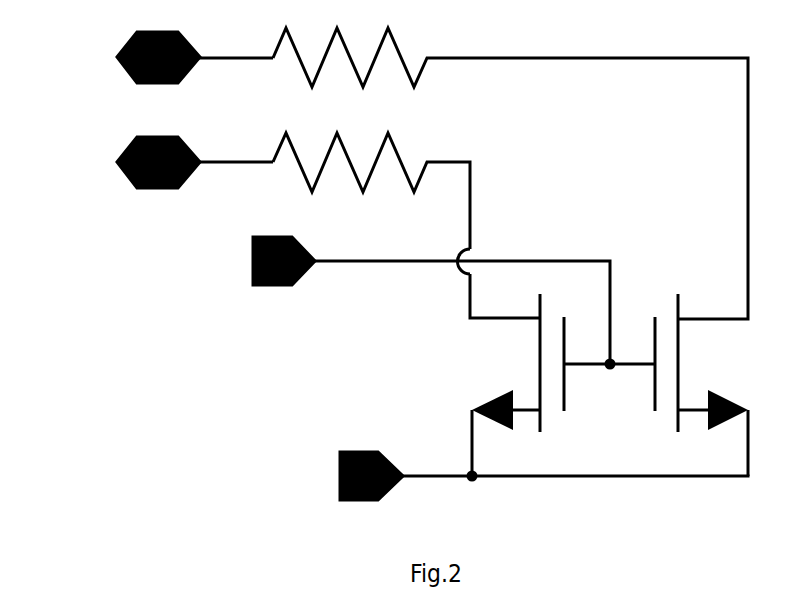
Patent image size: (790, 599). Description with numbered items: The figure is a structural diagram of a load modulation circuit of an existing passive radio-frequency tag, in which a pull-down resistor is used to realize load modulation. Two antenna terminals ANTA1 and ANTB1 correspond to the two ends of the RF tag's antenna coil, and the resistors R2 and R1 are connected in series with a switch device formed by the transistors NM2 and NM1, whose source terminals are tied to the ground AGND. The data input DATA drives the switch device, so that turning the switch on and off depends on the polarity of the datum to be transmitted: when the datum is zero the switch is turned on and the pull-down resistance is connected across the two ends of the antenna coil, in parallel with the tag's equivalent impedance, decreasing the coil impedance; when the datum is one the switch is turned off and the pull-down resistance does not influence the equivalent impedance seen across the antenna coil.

The antenna terminal A1 ANTA1 is at (152, 57).
The antenna terminal B1 ANTB1 is at (152, 162).
The resistor R1 is at (406, 219).
The resistor R2 is at (510, 163).
The data input terminal DATA is at (423, 303).
The NMOS transistor NM1 is at (535, 385).
The NMOS transistor NM2 is at (718, 385).
The analog ground terminal AGND is at (508, 476).